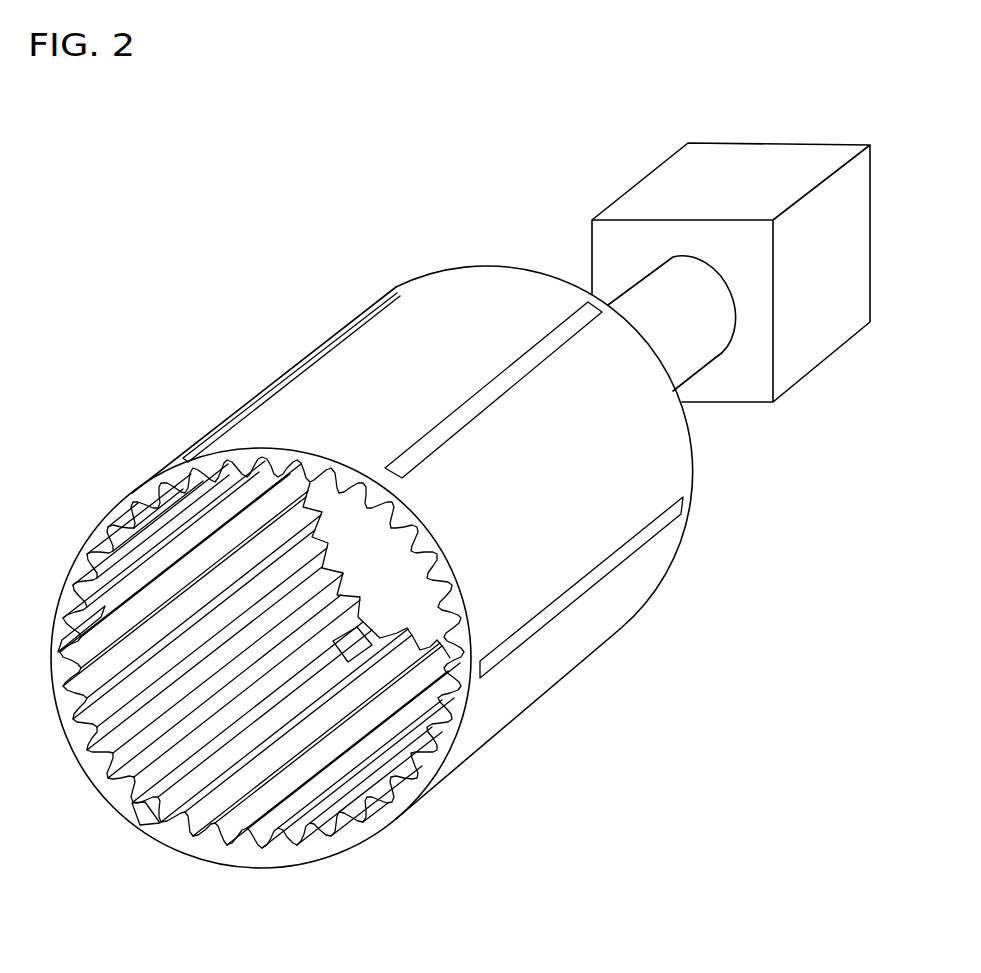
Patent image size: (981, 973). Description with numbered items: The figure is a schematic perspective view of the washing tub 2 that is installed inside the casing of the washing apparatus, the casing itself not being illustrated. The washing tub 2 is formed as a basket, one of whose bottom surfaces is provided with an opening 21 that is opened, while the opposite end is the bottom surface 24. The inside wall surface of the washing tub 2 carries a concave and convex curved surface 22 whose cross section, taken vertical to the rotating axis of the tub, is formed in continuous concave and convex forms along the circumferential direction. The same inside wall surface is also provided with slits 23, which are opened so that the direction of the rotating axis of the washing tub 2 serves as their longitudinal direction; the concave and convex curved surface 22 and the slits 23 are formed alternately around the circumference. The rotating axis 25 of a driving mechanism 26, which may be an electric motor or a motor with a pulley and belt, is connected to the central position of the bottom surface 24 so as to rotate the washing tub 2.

The washing tub 2 is at (505, 273).
The opening 21 is at (248, 667).
The concave and convex curved surface 22 is at (97, 556).
The slits 23 is at (362, 318).
The bottom surface 24 is at (348, 503).
The rotating axis 25 is at (629, 284).
The driving mechanism 26 is at (716, 140).